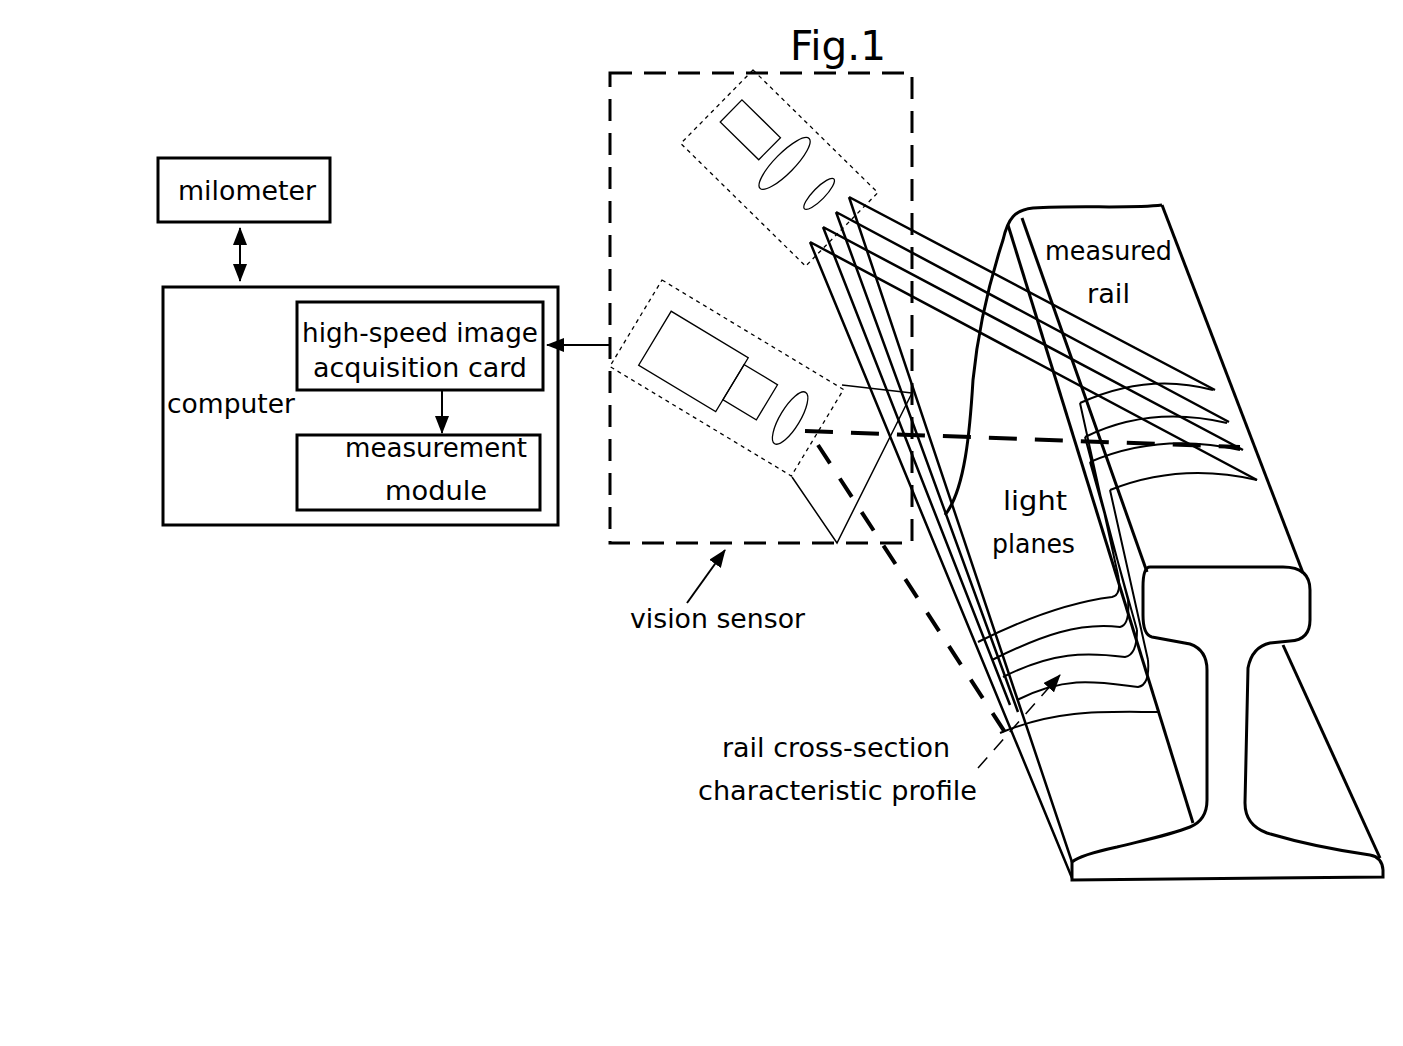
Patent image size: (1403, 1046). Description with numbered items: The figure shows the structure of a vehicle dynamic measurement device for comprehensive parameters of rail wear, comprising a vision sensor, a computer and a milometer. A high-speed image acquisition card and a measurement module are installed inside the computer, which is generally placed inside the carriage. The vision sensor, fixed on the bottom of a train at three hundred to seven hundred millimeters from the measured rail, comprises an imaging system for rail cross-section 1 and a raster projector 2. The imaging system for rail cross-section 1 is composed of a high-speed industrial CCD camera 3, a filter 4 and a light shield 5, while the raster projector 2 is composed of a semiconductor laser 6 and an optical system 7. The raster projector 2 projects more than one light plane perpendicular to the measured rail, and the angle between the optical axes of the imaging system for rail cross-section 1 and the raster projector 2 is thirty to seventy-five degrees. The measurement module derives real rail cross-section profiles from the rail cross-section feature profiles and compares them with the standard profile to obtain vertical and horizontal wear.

The imaging system for rail cross-section 1 is at (700, 424).
The raster projector 2 is at (740, 206).
The high-speed industrial CCD camera 3 is at (723, 332).
The filter 4 is at (804, 392).
The light shield 5 is at (803, 505).
The semiconductor laser 6 is at (735, 144).
The optical system 7 is at (817, 149).